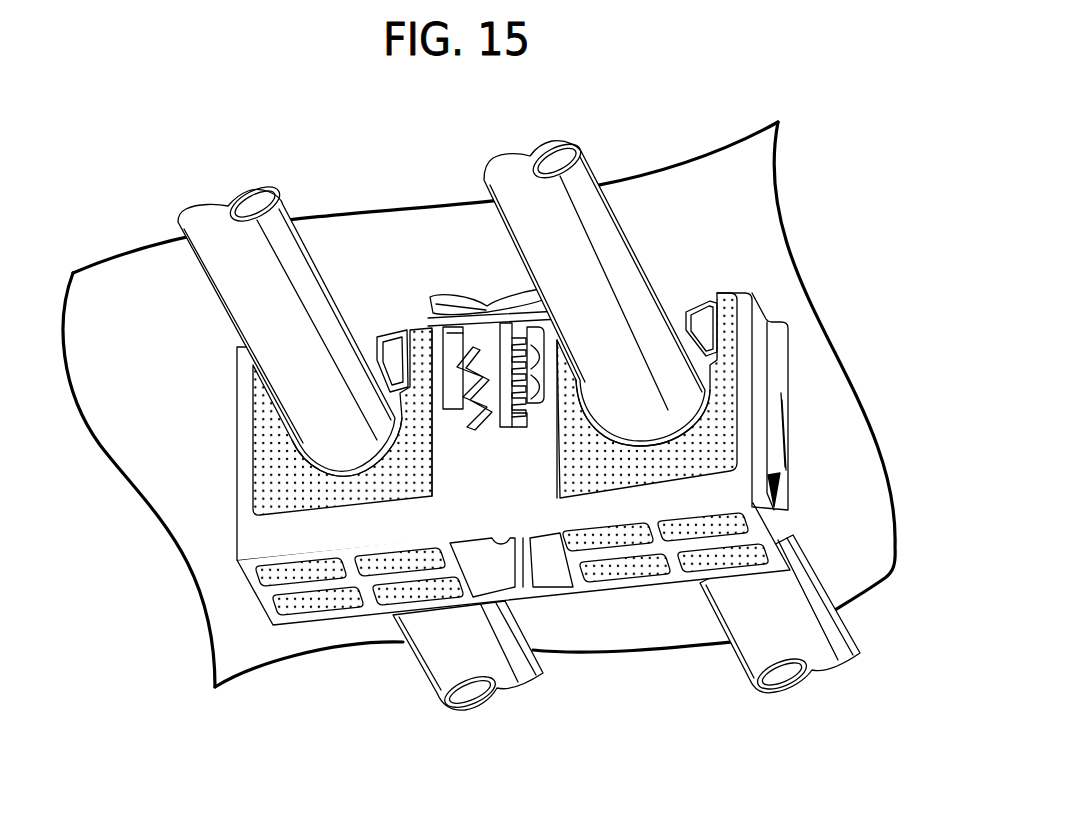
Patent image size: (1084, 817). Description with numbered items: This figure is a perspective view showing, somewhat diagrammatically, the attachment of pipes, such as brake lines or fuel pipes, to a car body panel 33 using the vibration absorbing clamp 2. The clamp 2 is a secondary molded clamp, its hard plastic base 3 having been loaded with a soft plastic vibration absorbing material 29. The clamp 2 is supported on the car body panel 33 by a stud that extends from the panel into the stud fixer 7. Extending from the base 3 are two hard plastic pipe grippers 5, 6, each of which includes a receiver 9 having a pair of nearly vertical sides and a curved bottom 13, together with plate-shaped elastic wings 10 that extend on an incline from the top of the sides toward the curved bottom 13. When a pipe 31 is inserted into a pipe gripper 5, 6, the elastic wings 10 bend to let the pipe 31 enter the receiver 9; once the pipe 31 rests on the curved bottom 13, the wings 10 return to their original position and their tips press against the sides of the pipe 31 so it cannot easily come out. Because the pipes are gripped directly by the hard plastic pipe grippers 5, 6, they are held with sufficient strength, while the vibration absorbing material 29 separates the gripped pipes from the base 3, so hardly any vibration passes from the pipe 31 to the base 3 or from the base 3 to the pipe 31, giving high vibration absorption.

The vibration absorbing clamp 2 is at (530, 463).
The base 3 is at (608, 531).
The pipe gripper 5 is at (382, 328).
The pipe gripper 6 is at (530, 386).
The stud fixer 7 is at (491, 478).
The receiver 9 is at (327, 450).
The elastic wings 10 is at (392, 331).
The curved bottom 13 is at (320, 490).
The vibration absorbing material 29 is at (724, 447).
The pipe 31 is at (249, 318).
The car body panel 33 is at (403, 224).